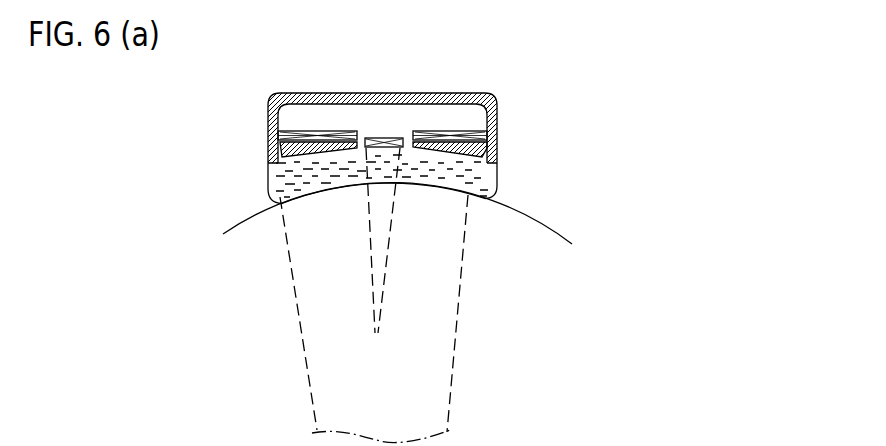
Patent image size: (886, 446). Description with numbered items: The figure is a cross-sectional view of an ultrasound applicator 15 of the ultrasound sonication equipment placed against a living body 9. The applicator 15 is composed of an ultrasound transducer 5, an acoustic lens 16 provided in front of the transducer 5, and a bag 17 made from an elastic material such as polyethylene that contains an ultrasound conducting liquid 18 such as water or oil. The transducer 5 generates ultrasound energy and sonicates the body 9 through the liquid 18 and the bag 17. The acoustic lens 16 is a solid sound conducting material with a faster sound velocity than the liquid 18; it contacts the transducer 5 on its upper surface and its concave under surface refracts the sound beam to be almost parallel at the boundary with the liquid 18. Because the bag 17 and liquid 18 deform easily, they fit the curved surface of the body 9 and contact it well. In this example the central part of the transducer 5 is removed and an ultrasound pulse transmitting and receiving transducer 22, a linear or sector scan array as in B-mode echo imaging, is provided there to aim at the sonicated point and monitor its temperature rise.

The ultrasound pulse transmitting and receiving transducer 22 is at (388, 138).
The ultrasound transducer 5 is at (328, 130).
The ultrasound applicator 15 is at (495, 97).
The acoustic lens 16 is at (488, 156).
The liquid 18 is at (482, 172).
The bag 17 is at (493, 188).
The body 9 is at (527, 226).